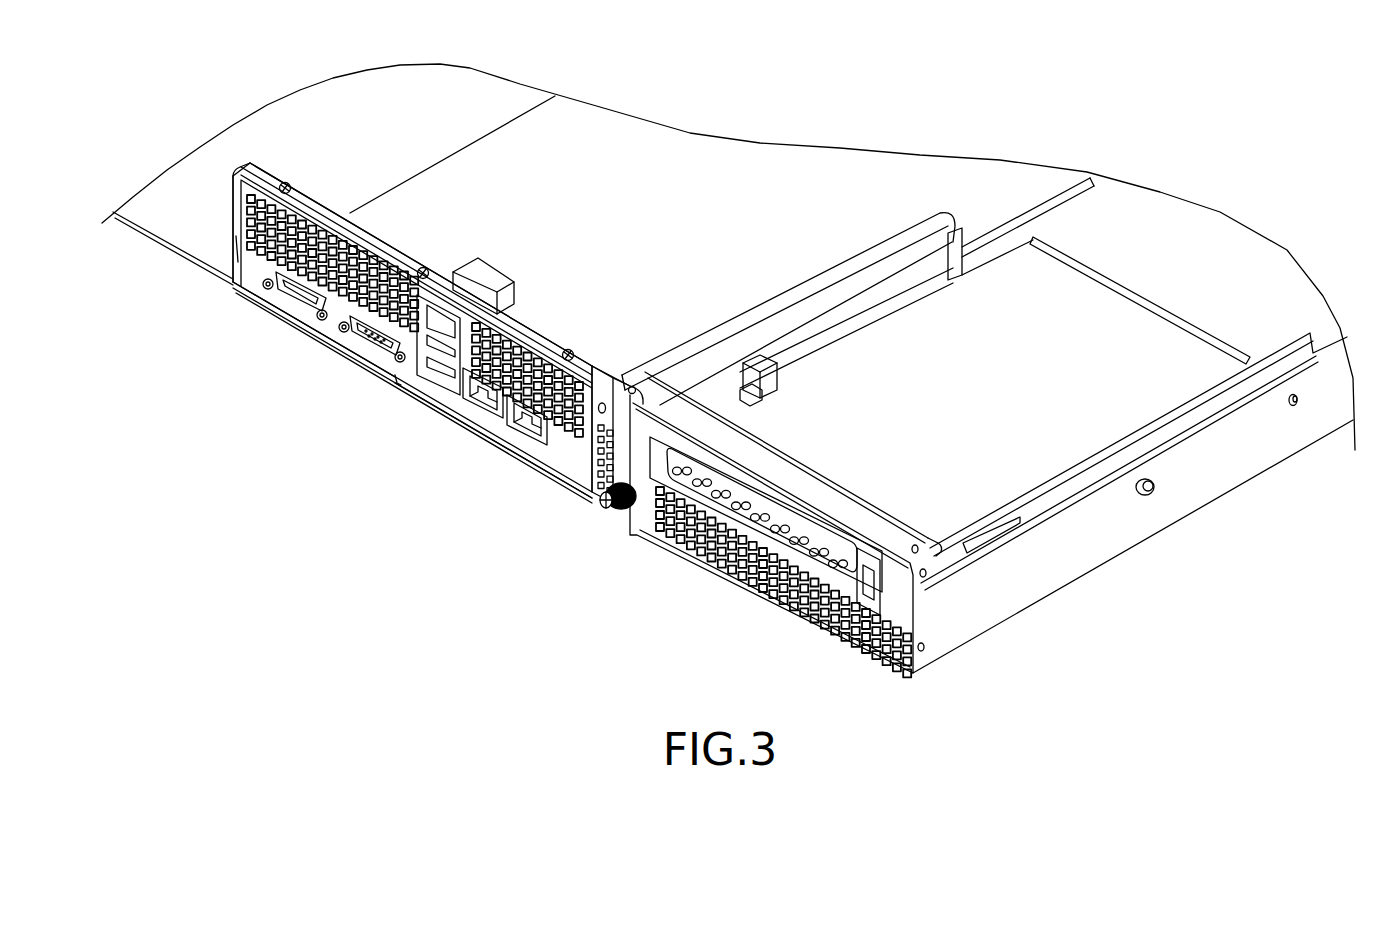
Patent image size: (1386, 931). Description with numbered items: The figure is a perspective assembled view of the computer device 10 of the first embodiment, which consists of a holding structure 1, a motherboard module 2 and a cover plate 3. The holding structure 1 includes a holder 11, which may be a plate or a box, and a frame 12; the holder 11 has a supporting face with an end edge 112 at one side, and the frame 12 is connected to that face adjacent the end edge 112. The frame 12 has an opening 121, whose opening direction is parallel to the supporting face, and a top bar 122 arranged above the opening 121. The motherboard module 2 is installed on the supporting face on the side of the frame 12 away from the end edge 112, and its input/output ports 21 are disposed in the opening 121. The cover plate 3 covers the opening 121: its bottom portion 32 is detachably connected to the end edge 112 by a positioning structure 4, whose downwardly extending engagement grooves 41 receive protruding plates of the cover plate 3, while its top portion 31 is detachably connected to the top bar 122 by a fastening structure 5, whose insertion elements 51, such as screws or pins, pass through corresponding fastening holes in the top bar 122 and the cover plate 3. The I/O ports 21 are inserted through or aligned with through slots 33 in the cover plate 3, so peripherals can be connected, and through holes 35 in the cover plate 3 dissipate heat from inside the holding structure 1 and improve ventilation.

The computer device 10 is at (729, 34).
The holding structure 1 is at (397, 314).
The holder 11 is at (372, 291).
The end edge 112 is at (497, 436).
The frame 12 is at (595, 450).
The opening 121 is at (387, 258).
The top bar 122 is at (525, 328).
The motherboard module 2 is at (694, 152).
The input/output (I/O) ports 21 is at (488, 278).
The cover plate 3 is at (205, 252).
The top portion of the cover plate 31 is at (246, 176).
The bottom portion of the cover plate 32 is at (326, 347).
The through slots 33 is at (300, 305).
The through holes 35 is at (247, 240).
The positioning structure 4 is at (412, 392).
The engagement grooves 41 is at (405, 395).
The fastening structure 5 is at (372, 254).
The insertion elements 51 is at (285, 182).